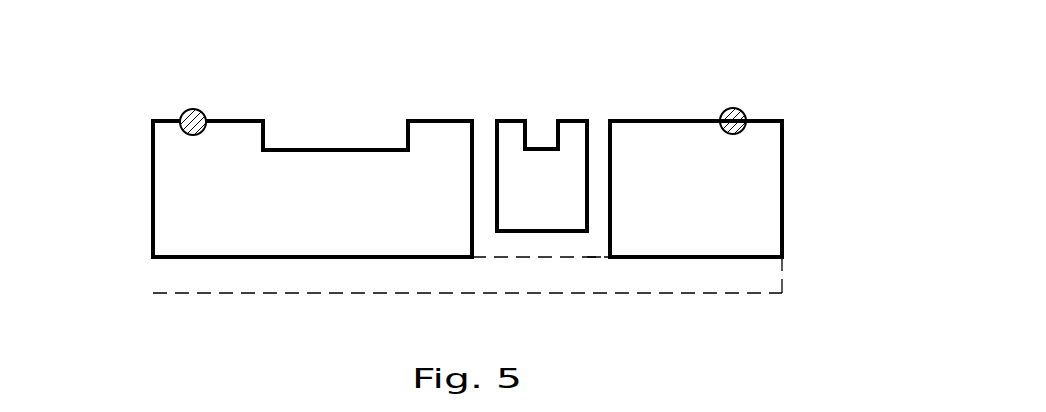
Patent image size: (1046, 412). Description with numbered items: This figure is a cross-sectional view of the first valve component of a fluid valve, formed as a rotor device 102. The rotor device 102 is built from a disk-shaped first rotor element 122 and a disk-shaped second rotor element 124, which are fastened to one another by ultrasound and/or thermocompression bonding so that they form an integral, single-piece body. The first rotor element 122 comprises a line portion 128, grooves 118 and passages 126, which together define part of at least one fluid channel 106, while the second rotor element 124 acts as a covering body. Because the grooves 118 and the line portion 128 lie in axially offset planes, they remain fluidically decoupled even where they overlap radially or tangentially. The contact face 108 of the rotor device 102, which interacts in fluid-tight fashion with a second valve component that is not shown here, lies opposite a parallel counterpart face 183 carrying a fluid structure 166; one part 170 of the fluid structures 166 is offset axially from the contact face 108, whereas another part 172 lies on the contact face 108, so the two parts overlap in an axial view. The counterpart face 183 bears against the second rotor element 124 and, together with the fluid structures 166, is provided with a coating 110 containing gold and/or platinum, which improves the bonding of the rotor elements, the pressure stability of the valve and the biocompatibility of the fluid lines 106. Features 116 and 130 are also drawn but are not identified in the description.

The rotor device 102 is at (795, 108).
The fluid channel 106 is at (337, 140).
The contact face 108 is at (448, 118).
The coating 110 is at (640, 119).
The sidewall 116 is at (160, 243).
The grooves 118 is at (297, 135).
The first rotor element 122 is at (787, 117).
The second rotor element 124 is at (787, 259).
The passages 126 is at (483, 130).
The line portion 128 is at (547, 247).
The conductive via 130 is at (190, 111).
The fluid structures 166 is at (604, 264).
The part of the fluid structures 170 is at (507, 250).
The other part of the fluid structures 172 is at (546, 150).
The counterpart face 183 is at (300, 258).